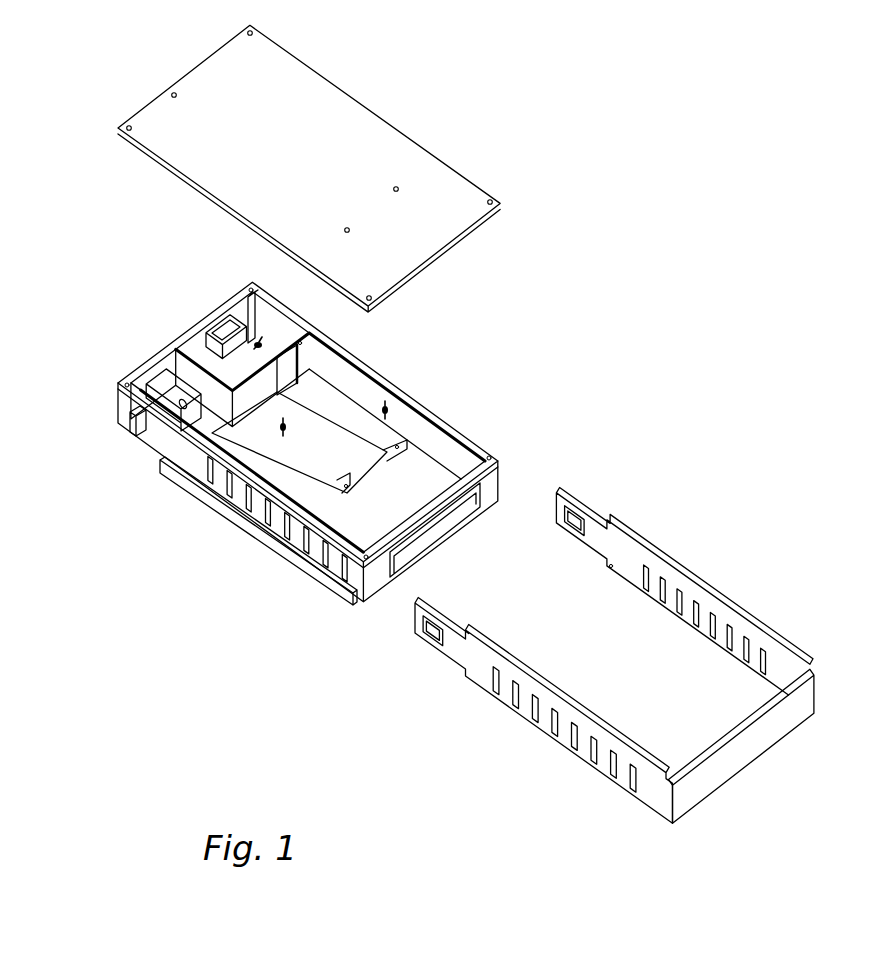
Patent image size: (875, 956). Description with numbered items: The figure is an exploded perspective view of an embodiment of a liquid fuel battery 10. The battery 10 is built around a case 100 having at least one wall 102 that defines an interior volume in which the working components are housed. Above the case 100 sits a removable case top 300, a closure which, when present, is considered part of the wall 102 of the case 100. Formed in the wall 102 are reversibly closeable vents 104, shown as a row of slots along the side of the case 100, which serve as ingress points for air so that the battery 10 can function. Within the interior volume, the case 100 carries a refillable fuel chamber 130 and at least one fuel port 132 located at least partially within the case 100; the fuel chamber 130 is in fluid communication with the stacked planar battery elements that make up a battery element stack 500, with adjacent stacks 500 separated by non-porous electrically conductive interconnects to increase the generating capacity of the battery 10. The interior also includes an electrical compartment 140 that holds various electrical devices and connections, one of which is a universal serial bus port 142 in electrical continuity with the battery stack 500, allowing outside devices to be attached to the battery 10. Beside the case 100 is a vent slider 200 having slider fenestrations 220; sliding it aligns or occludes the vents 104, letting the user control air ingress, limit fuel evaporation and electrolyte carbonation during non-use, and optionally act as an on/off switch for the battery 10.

The liquid fuel battery 10 is at (447, 424).
The case 100 is at (334, 422).
The wall 102 is at (487, 445).
The vents 104 is at (300, 533).
The fuel chamber 130 is at (288, 426).
The fuel port 132 is at (178, 400).
The electrical compartment 140 is at (257, 339).
The universal serial bus port 142 is at (215, 322).
The battery element stack 500 is at (463, 424).
The vent slider 200 is at (614, 656).
The slider fenestrations 220 is at (592, 750).
The case top 300 is at (402, 128).